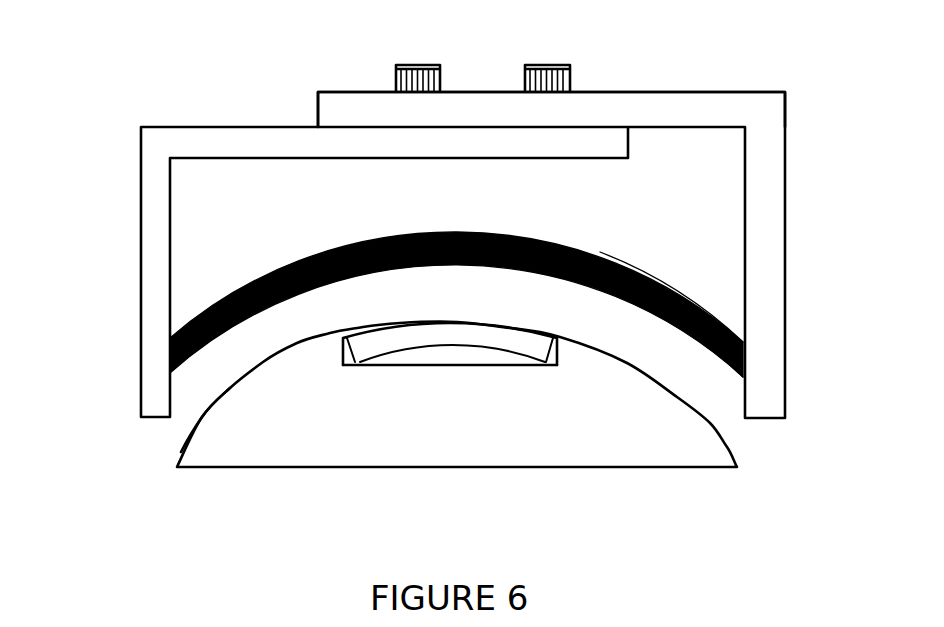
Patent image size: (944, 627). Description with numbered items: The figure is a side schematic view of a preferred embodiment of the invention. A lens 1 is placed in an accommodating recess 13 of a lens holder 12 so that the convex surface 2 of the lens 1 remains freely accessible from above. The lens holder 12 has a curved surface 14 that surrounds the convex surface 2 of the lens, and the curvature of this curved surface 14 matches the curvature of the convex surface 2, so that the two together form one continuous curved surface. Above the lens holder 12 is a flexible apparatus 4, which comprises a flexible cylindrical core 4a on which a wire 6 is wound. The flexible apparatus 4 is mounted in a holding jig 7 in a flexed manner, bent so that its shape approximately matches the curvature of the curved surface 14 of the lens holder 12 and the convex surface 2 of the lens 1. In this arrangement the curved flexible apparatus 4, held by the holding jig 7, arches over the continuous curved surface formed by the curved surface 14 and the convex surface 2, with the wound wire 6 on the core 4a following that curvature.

The lens 1 is at (535, 362).
The convex surface 2 is at (370, 333).
The flexible apparatus 4 is at (663, 283).
The flexible cylindrical core 4a is at (707, 317).
The wire 6 is at (722, 365).
The holding jig 7 is at (350, 91).
The lens holder 12 is at (215, 450).
The accommodating recess 13 is at (418, 367).
The curved surface 14 is at (202, 417).